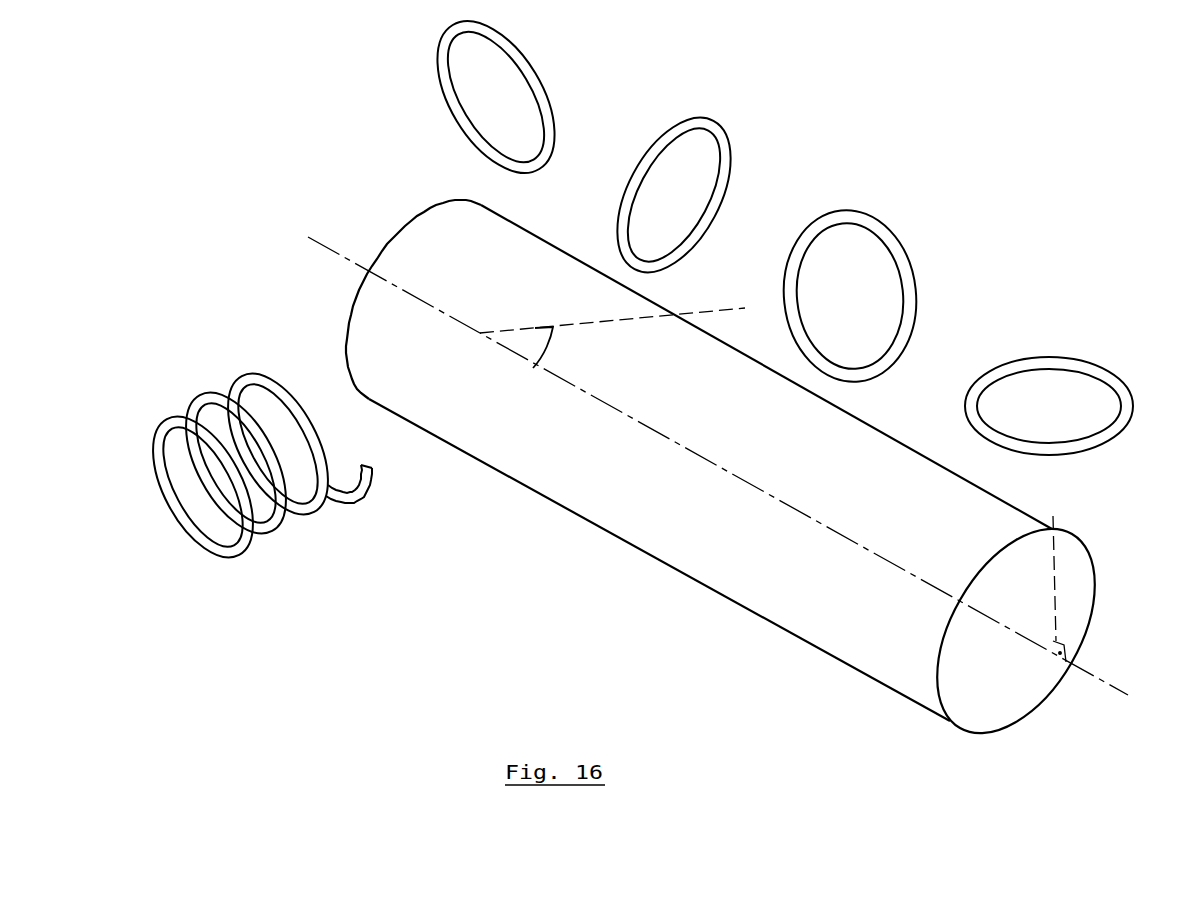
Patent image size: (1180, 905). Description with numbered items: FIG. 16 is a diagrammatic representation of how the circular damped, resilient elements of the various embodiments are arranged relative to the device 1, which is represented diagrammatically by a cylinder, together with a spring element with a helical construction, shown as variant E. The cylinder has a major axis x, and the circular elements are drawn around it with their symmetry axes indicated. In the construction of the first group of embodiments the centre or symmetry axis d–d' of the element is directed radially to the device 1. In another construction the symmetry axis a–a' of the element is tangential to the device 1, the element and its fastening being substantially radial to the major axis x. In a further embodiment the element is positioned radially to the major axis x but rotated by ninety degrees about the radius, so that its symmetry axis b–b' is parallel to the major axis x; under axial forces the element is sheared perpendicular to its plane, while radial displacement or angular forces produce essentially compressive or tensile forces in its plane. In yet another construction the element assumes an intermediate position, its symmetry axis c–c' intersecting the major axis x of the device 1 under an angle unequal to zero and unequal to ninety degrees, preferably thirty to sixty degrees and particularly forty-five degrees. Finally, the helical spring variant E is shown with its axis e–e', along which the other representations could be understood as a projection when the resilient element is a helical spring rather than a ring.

The device 1 is at (911, 736).
The major axis x is at (1112, 690).
The symmetry axis a–a' a is at (495, 96).
The symmetry axis a– a' is at (543, 65).
The symmetry axis b–b' b is at (673, 195).
The symmetry axis b– b' is at (718, 222).
The symmetry axis c–c' c is at (832, 296).
The symmetry axis c– c' is at (911, 282).
The centre or symmetry axis d–d' d is at (1049, 374).
The centre or symmetry axis d– d' is at (1061, 534).
The spring element with helical construction E is at (176, 552).
The axis e–e' e is at (189, 510).
The axis e– e' is at (296, 437).